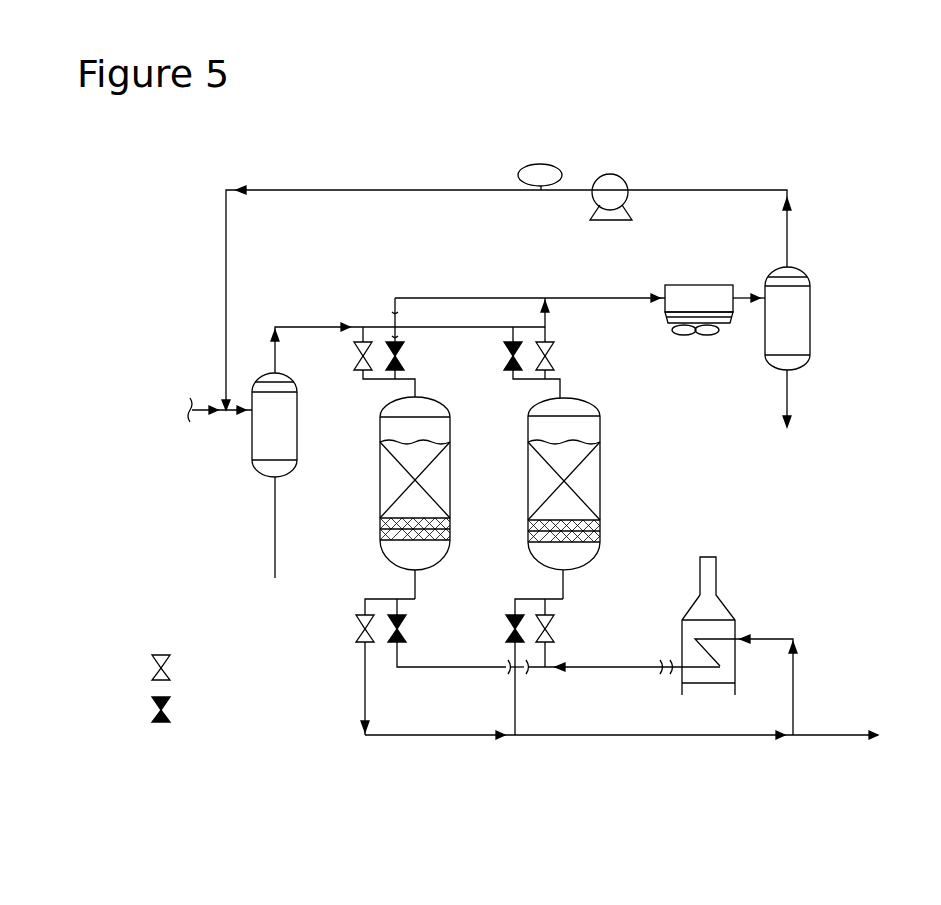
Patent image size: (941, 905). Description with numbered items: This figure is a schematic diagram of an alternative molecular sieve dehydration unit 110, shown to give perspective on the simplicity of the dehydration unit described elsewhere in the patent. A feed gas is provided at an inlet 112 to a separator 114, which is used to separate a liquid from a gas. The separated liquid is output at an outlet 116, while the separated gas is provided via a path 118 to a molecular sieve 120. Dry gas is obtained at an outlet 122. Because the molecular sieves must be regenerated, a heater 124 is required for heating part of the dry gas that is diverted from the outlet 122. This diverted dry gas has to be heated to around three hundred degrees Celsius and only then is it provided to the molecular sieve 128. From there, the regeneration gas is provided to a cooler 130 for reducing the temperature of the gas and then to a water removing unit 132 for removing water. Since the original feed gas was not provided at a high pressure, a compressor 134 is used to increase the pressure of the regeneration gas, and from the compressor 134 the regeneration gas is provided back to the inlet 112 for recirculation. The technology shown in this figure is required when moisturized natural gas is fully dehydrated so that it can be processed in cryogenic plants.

The molecular sieve dehydration unit 110 is at (620, 95).
The inlet 112 is at (200, 405).
The separator 114 is at (262, 440).
The outlet 116 is at (275, 545).
The path 118 is at (305, 325).
The molecular sieve 120 is at (438, 483).
The outlet 122 is at (825, 736).
The heater 124 is at (713, 605).
The molecular sieve 128 is at (600, 422).
The cooler 130 is at (688, 285).
The water removing unit 132 is at (793, 330).
The compressor 134 is at (627, 172).